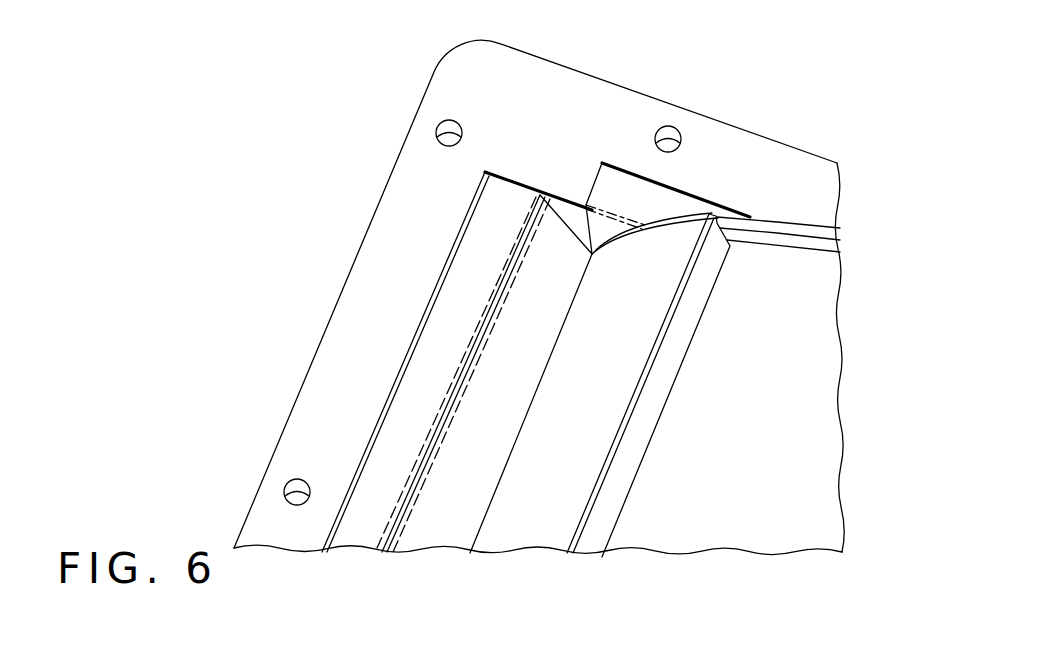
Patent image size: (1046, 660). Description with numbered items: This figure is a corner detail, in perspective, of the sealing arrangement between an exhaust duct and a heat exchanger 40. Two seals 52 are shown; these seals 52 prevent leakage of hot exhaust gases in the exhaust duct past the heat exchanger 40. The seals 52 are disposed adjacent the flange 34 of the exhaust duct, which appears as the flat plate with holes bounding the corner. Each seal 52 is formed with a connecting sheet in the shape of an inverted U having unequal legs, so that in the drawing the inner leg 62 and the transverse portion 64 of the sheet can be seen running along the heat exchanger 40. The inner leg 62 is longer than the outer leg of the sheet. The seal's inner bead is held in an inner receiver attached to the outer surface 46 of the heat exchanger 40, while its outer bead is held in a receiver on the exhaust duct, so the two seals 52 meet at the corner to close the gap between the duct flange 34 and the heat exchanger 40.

The flange 34 is at (657, 117).
The heat exchanger 40 is at (803, 342).
The outer surface 46 is at (582, 452).
The seal 52 is at (499, 221).
The inner leg 62 is at (510, 404).
The transverse portion 64 is at (465, 327).